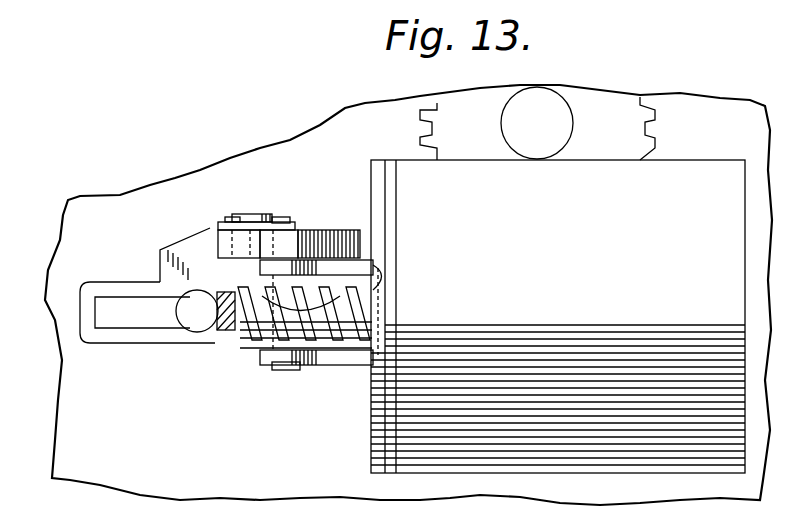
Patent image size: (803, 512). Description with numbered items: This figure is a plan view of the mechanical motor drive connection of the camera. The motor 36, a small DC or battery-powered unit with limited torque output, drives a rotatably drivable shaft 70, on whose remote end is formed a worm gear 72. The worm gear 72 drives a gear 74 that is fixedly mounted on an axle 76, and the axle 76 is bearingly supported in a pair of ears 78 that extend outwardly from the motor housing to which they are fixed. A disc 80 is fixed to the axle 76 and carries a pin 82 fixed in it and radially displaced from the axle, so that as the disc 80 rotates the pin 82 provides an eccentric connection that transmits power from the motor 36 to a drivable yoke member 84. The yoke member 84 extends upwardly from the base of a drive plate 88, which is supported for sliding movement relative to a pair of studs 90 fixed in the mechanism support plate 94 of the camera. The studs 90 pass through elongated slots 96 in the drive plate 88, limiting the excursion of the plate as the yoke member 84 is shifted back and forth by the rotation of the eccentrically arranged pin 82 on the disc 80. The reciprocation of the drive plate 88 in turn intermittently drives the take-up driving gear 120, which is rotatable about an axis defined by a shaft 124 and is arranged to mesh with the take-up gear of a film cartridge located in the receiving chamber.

The motor 36 is at (572, 257).
The shaft 70 is at (368, 293).
The worm gear 72 is at (247, 348).
The gear 74 is at (226, 322).
The axle 76 is at (287, 236).
The ears 78 is at (330, 262).
The disc 80 is at (222, 243).
The pin 82 is at (244, 214).
The yoke member 84 is at (230, 221).
The drive plate 88 is at (158, 258).
The studs 90 is at (193, 320).
The mechanism support plate 94 is at (186, 431).
The elongated slots 96 is at (122, 326).
The take-up driving gear 120 is at (492, 140).
The shaft 124 is at (562, 121).